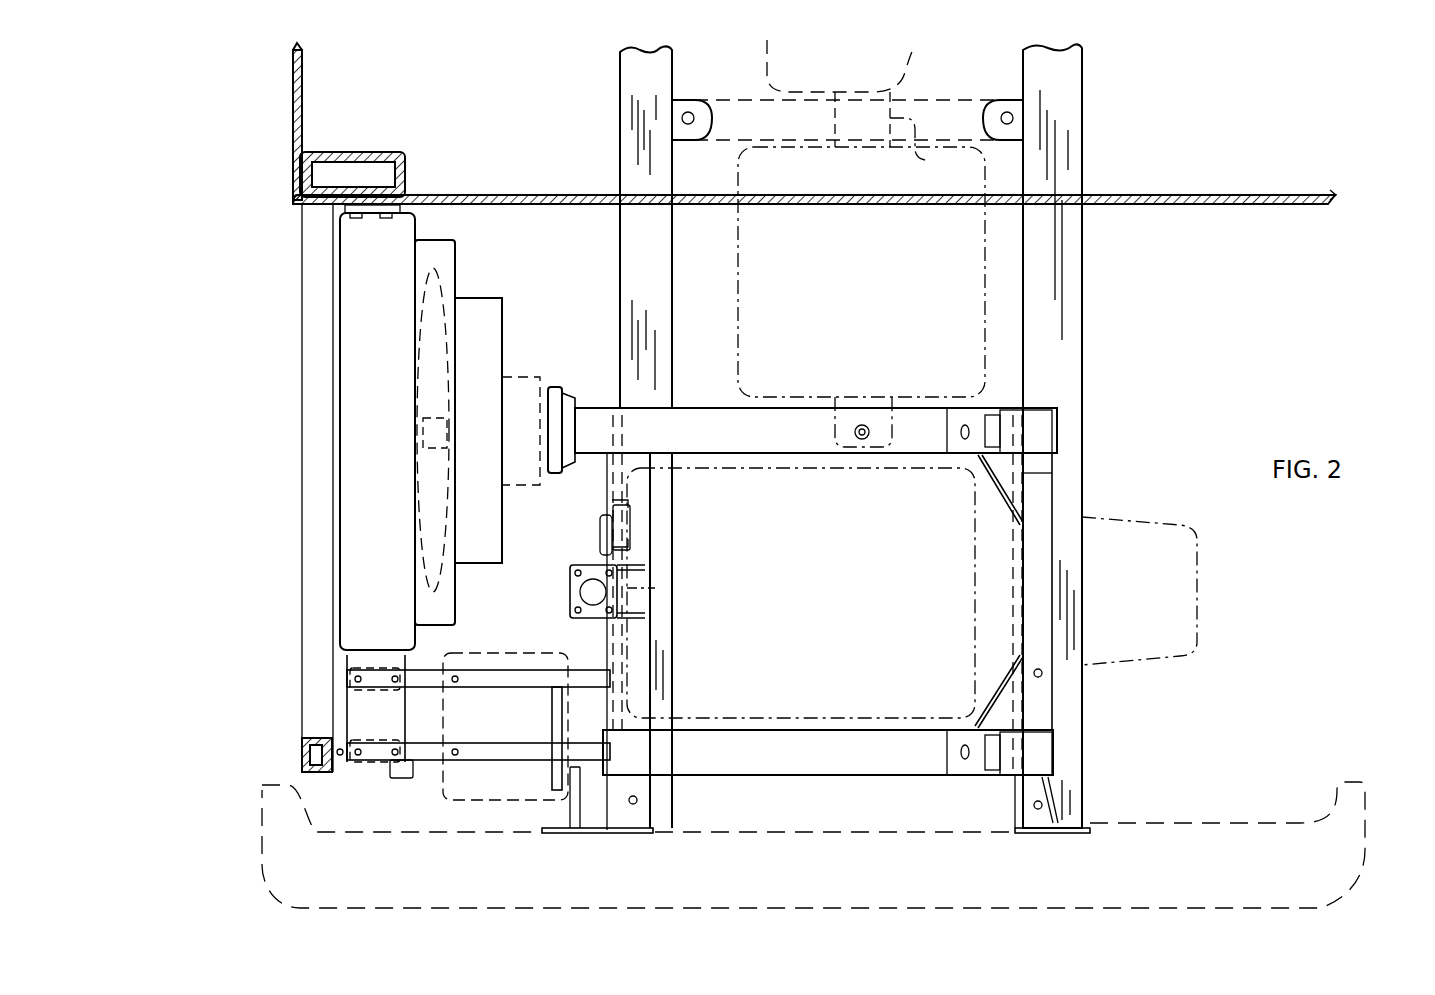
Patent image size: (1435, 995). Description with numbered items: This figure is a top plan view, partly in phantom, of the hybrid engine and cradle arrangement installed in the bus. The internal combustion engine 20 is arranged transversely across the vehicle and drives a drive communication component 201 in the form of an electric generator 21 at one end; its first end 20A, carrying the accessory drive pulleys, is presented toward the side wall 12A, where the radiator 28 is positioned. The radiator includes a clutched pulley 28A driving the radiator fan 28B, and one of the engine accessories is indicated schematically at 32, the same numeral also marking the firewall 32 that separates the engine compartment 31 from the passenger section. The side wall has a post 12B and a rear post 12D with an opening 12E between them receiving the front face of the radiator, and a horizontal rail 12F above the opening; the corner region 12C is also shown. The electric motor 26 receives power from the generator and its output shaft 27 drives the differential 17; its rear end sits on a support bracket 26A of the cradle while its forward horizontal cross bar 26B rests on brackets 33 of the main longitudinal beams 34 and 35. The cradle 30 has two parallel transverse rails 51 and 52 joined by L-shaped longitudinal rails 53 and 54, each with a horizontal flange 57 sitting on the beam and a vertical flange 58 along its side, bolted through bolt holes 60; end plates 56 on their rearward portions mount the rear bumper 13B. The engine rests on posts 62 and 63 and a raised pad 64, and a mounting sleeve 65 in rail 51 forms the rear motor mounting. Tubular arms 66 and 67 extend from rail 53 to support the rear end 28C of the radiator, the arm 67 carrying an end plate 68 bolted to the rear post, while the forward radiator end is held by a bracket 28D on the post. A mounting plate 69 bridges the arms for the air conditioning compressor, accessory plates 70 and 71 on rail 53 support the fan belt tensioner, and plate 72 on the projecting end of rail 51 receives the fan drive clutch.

The side wall 12A is at (308, 102).
The post 12B is at (395, 145).
The corner 12C is at (292, 148).
The rear post 12D is at (310, 738).
The opening 12E is at (296, 455).
The horizontal rail 12F is at (312, 320).
The rear bumper 13B is at (1180, 823).
The differential 17 is at (916, 70).
The internal combustion engine 20 is at (862, 606).
The first end of the engine 20A is at (655, 588).
The electric generator 21 is at (1148, 609).
The electric motor 26 is at (880, 315).
The support bracket 26A is at (872, 397).
The horizontal cross bar 26B is at (748, 100).
The output shaft 27 is at (920, 140).
The radiator 28 is at (388, 443).
The clutched pulley 28A is at (518, 372).
The radiator fan 28B is at (440, 300).
The rear end of the radiator 28C is at (350, 655).
The bracket 28D is at (360, 215).
The cradle 30 is at (893, 780).
The engine compartment 31 is at (572, 296).
The firewall 32 is at (548, 193).
The brackets 33 is at (695, 125).
The main longitudinal beam 34 is at (632, 158).
The main longitudinal beam 35 is at (1084, 170).
The transverse rail 51 is at (732, 408).
The transverse rail 52 is at (845, 772).
The longitudinal rail 53 is at (650, 655).
The longitudinal rail 54 is at (1045, 500).
The end plate 56 is at (604, 832).
The horizontal flange 57 is at (650, 535).
The vertical flange 58 is at (650, 648).
The bolt holes 60 is at (637, 800).
The post 62 is at (962, 460).
The post 63 is at (935, 725).
The raised pad 64 is at (570, 585).
The mounting sleeve 65 is at (860, 431).
The tubular arm 66 is at (350, 672).
The tubular arm 67 is at (490, 765).
The end plate 68 is at (338, 765).
The mounting plate 69 is at (552, 708).
The second accessory mounting plate 70 is at (613, 508).
The accessory mounting plate 71 is at (600, 535).
The accessory mounting plate 72 is at (558, 410).
The drive communication component 201 is at (1115, 460).